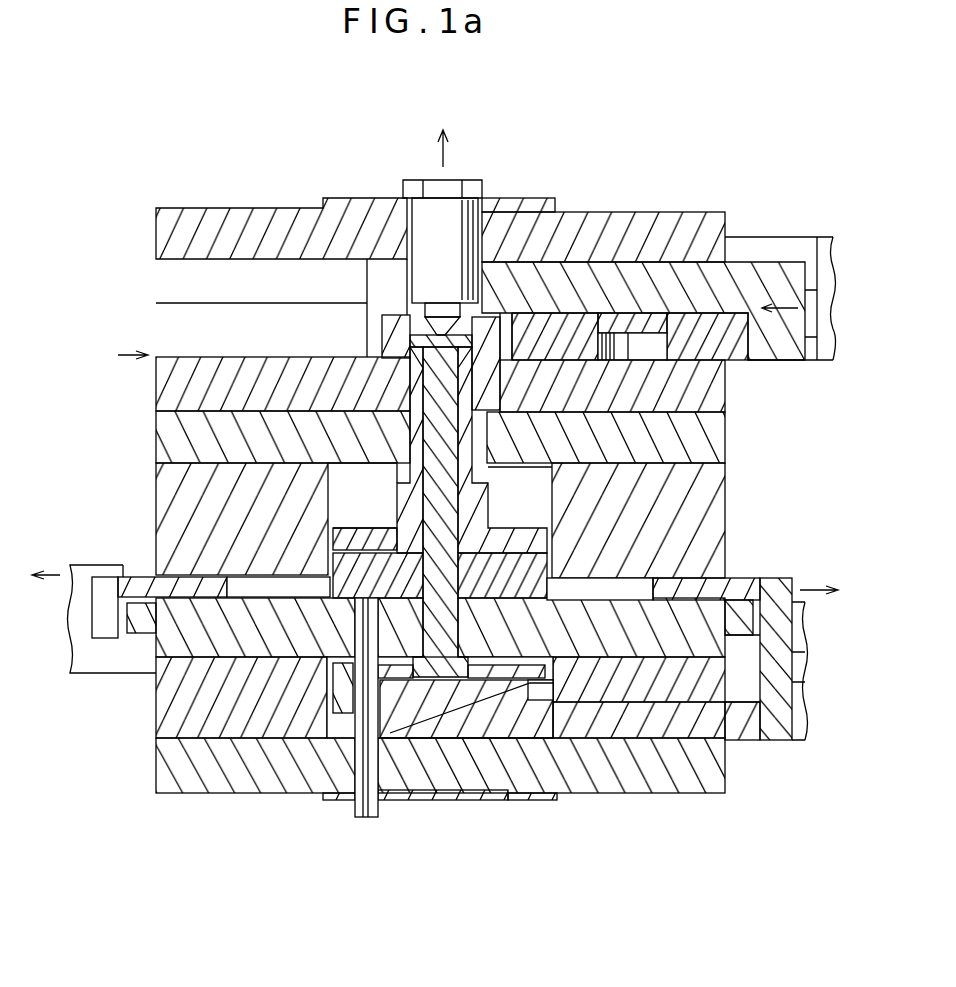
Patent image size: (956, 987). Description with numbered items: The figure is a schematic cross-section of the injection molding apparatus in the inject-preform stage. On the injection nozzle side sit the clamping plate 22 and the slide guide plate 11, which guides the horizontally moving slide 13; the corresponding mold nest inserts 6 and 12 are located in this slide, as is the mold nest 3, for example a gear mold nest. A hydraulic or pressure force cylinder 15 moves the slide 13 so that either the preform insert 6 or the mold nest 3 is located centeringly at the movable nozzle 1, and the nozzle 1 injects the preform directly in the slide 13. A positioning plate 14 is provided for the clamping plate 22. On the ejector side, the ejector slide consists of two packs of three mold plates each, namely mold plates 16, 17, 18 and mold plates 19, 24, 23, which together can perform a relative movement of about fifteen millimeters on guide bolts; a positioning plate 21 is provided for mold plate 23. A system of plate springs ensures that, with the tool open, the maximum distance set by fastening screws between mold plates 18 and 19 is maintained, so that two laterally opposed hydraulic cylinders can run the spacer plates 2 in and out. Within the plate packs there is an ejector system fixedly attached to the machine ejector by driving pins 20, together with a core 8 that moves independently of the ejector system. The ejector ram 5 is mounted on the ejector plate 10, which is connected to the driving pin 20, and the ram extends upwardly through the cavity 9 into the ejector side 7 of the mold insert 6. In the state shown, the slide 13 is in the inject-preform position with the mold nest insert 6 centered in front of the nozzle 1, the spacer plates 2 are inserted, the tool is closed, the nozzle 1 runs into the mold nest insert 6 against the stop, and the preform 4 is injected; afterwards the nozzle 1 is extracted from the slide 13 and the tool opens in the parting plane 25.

The movable nozzle 1 is at (417, 210).
The spacer plates 2 is at (128, 583).
The mold nest 3 is at (658, 350).
The preform 4 is at (417, 350).
The ejector ram 5 is at (403, 443).
The mold nest insert 6 is at (530, 255).
The ejector side 7 is at (388, 368).
The core 8 is at (435, 448).
The cavity 9 is at (337, 515).
The ejector plate 10 is at (337, 582).
The slide guide plate 11 is at (752, 243).
The mold nest insert 12 is at (740, 352).
The slide 13 is at (780, 263).
The positioning plate 14 is at (500, 200).
The force cylinder 15 is at (833, 300).
The mold plate 16 is at (723, 412).
The mold plate 17 is at (721, 447).
The mold plate 18 is at (718, 528).
The mold plate 19 is at (713, 643).
The driving pin 20 is at (360, 807).
The positioning plate 21 is at (558, 800).
The clamping plate 22 is at (176, 222).
The mold plate 23 is at (172, 790).
The mold plate 24 is at (166, 731).
The parting plane 25 is at (117, 349).